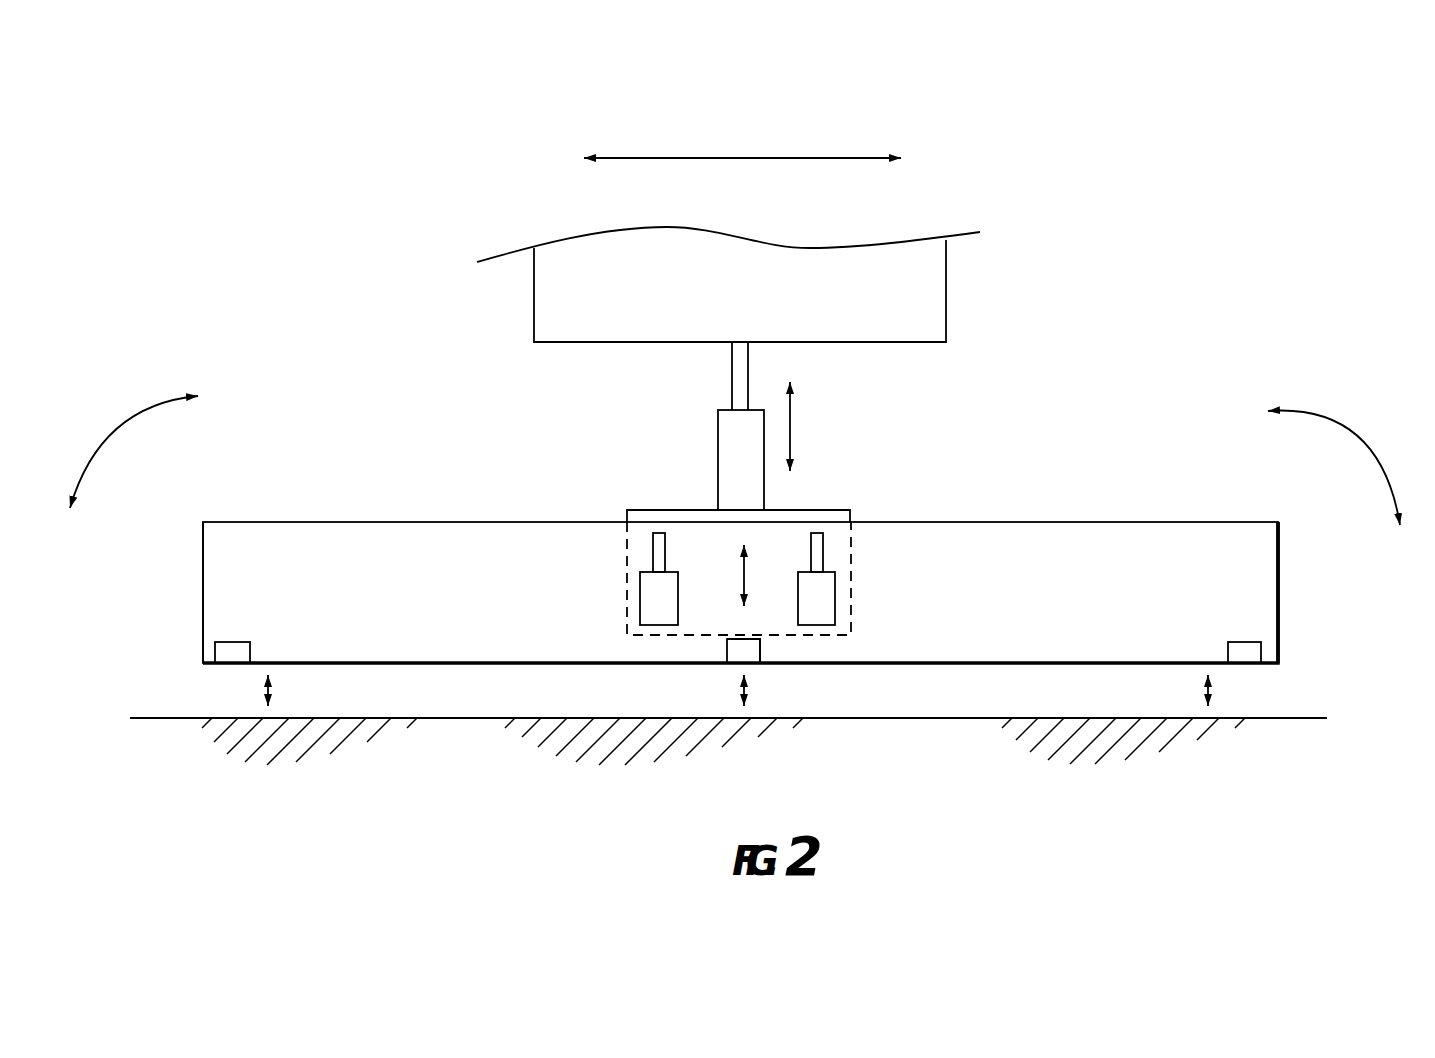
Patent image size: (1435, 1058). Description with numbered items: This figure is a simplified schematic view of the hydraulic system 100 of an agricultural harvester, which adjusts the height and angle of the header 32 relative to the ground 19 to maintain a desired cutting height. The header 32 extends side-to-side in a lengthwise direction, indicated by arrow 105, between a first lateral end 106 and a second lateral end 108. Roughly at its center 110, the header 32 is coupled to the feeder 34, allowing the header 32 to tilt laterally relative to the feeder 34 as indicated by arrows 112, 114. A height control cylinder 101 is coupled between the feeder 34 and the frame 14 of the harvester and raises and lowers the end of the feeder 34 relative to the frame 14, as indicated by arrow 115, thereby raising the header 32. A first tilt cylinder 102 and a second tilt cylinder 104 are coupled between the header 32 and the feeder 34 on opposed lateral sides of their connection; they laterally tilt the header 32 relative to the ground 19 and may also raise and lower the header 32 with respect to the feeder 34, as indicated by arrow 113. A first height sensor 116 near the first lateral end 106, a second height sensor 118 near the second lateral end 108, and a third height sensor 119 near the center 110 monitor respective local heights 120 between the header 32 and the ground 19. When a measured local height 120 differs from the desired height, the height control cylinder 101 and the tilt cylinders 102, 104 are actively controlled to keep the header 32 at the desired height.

The frame 14 is at (534, 282).
The ground 19 is at (185, 717).
The header 32 is at (432, 518).
The feeder 34 is at (813, 510).
The hydraulic system 100 is at (1100, 405).
The height control cylinder 101 is at (718, 455).
The first tilt cylinder 102 is at (640, 595).
The second tilt cylinder 104 is at (835, 595).
The arrow indicating lengthwise direction 105 is at (780, 157).
The first lateral end 106 is at (203, 570).
The second lateral end 108 is at (1278, 567).
The center 110 is at (713, 675).
The arrow indicating lateral tilt 112 is at (112, 428).
The arrow indicating raising and lowering of header 113 is at (744, 582).
The arrow indicating lateral tilt 114 is at (1355, 438).
The arrow indicating raising and lowering of feeder 115 is at (790, 435).
The first height sensor 116 is at (242, 642).
The second height sensor 118 is at (1245, 642).
The third height sensor 119 is at (760, 650).
The local height 120 is at (272, 692).